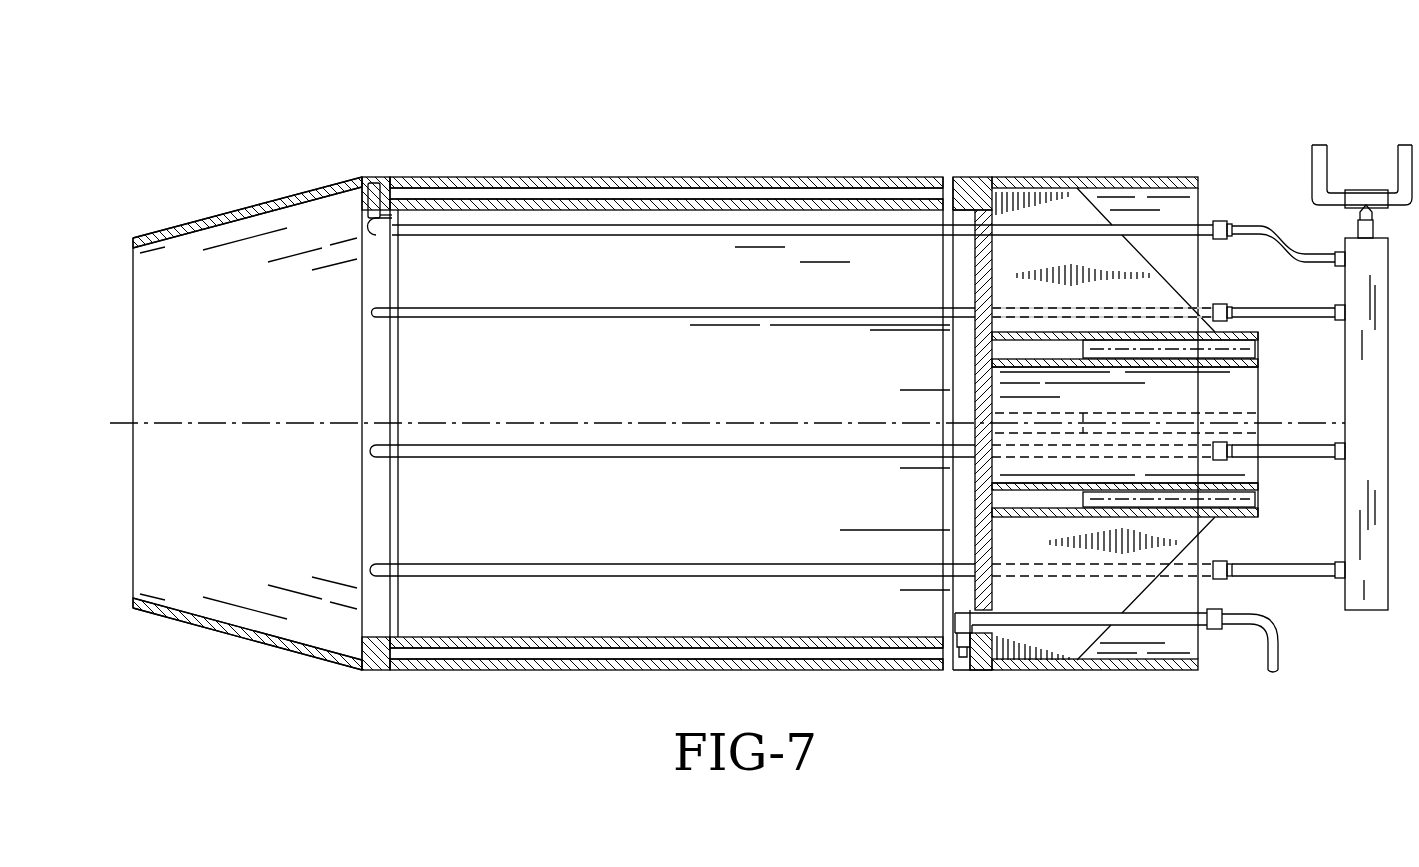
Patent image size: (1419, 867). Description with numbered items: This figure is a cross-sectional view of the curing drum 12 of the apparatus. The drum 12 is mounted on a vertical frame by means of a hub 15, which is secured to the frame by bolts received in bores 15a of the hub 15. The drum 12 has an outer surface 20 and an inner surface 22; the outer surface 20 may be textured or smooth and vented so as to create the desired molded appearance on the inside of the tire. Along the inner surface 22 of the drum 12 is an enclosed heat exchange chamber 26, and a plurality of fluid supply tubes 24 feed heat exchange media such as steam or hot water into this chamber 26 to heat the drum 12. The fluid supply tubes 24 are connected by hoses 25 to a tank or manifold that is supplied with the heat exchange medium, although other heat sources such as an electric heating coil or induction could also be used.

The curing drum 12 is at (527, 131).
The hub 15 is at (1243, 340).
The bores 15a is at (1245, 352).
The outer surface 20 is at (660, 178).
The inner surface 22 is at (738, 200).
The fluid supply tubes 24 is at (377, 207).
The hoses 25 is at (1262, 237).
The heat exchange chamber 26 is at (788, 194).